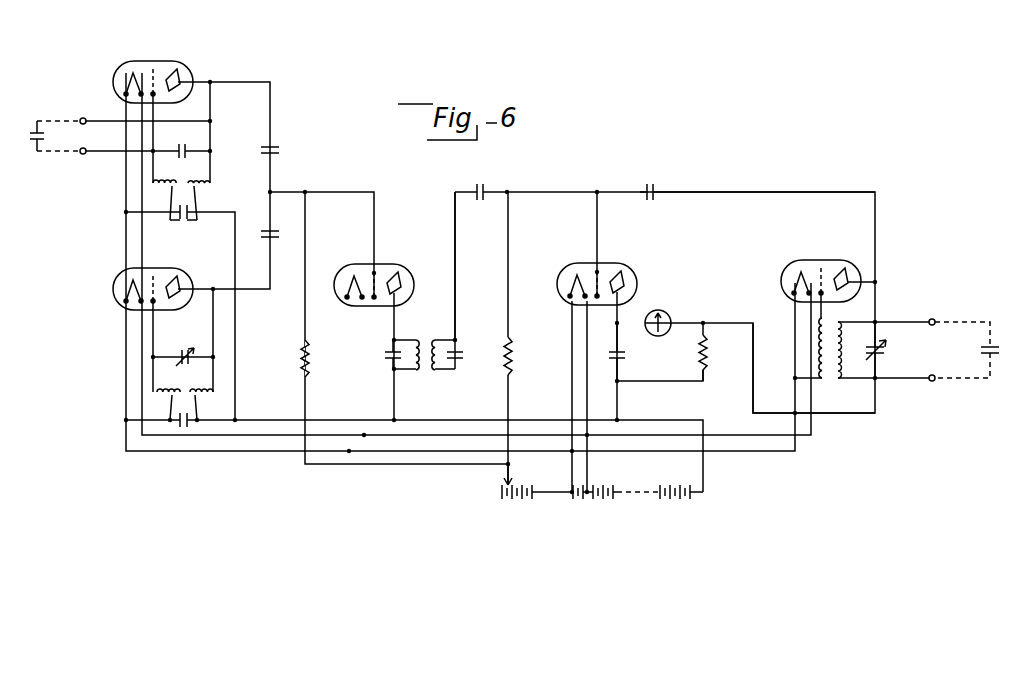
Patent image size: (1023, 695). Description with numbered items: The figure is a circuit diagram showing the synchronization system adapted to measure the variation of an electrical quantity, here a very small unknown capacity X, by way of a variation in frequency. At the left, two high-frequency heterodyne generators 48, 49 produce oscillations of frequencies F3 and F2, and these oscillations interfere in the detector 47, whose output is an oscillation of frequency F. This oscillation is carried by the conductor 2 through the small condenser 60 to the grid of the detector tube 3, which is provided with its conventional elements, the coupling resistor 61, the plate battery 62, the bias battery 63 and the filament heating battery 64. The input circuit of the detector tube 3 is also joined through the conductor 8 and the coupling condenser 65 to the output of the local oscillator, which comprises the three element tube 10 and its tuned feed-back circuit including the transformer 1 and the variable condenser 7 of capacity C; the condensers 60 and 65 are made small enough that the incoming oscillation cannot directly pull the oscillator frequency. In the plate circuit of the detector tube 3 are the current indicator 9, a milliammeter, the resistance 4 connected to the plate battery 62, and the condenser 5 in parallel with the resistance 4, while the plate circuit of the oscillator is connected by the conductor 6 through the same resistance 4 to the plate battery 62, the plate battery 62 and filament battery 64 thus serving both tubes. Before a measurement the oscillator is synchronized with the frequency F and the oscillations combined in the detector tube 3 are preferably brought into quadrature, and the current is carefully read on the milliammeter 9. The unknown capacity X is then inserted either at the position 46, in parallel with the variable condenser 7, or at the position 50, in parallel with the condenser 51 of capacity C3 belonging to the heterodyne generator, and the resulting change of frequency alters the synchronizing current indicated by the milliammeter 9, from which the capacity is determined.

The transformer 1 is at (833, 316).
The conductor 2 is at (455, 228).
The detector tube 3 is at (625, 270).
The resistance 4 is at (707, 355).
The condenser 5 is at (612, 358).
The conductor 6 is at (753, 362).
The variable condenser 7 is at (882, 355).
The conductor 8 is at (736, 192).
The current indicator 9 is at (668, 312).
The three element tube 10 is at (842, 265).
The position in parallel with condenser 7 46 is at (988, 353).
The detector 47 is at (396, 268).
The high-frequency heterodyne generator 48 is at (173, 65).
The high-frequency heterodyne generator 49 is at (175, 273).
The position in parallel with condenser 51 50 is at (33, 150).
The condenser 51 is at (179, 156).
The condenser 60 is at (484, 186).
The coupling resistor 61 is at (511, 360).
The plate battery 62 is at (667, 497).
The bias battery 63 is at (503, 496).
The filament heating battery 64 is at (578, 497).
The coupling condenser 65 is at (657, 185).